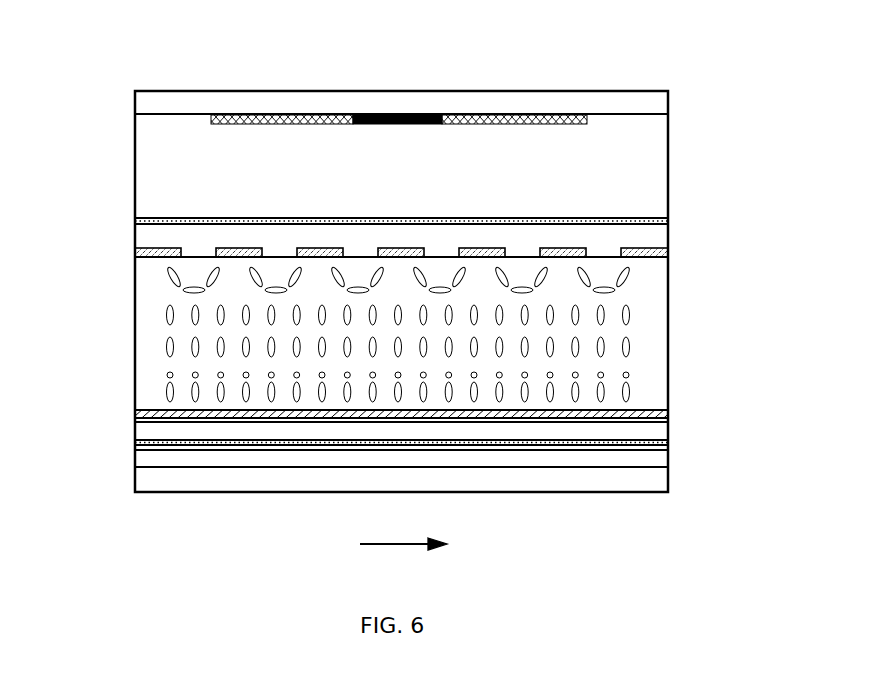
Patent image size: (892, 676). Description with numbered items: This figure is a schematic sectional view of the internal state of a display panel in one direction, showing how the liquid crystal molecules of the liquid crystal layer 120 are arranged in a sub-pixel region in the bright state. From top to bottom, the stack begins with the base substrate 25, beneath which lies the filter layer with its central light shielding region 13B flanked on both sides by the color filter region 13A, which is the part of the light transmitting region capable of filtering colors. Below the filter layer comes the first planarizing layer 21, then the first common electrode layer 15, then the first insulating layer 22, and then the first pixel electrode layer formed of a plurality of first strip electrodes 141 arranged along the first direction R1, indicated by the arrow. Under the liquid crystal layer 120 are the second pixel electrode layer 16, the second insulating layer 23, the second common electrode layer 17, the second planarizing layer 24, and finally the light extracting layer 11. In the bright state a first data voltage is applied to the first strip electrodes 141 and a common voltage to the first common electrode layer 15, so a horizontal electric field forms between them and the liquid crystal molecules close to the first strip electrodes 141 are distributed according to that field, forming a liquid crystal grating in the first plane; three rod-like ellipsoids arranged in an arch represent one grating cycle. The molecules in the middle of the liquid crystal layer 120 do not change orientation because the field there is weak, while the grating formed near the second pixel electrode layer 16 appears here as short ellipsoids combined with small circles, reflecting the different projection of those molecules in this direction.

The color filter region 13A is at (270, 113).
The light shielding region 13B is at (393, 113).
The base substrate 25 is at (649, 105).
The first planarizing layer 21 is at (158, 160).
The first common electrode layer 15 is at (640, 217).
The first insulating layer 22 is at (158, 240).
The first strip electrodes 141 is at (648, 252).
The liquid crystal layer 120 is at (647, 340).
The second pixel electrode layer 16 is at (135, 409).
The second insulating layer 23 is at (642, 434).
The second common electrode layer 17 is at (135, 438).
The second planarizing layer 24 is at (642, 464).
The light extracting layer 11 is at (147, 484).
The first direction R1 is at (403, 531).